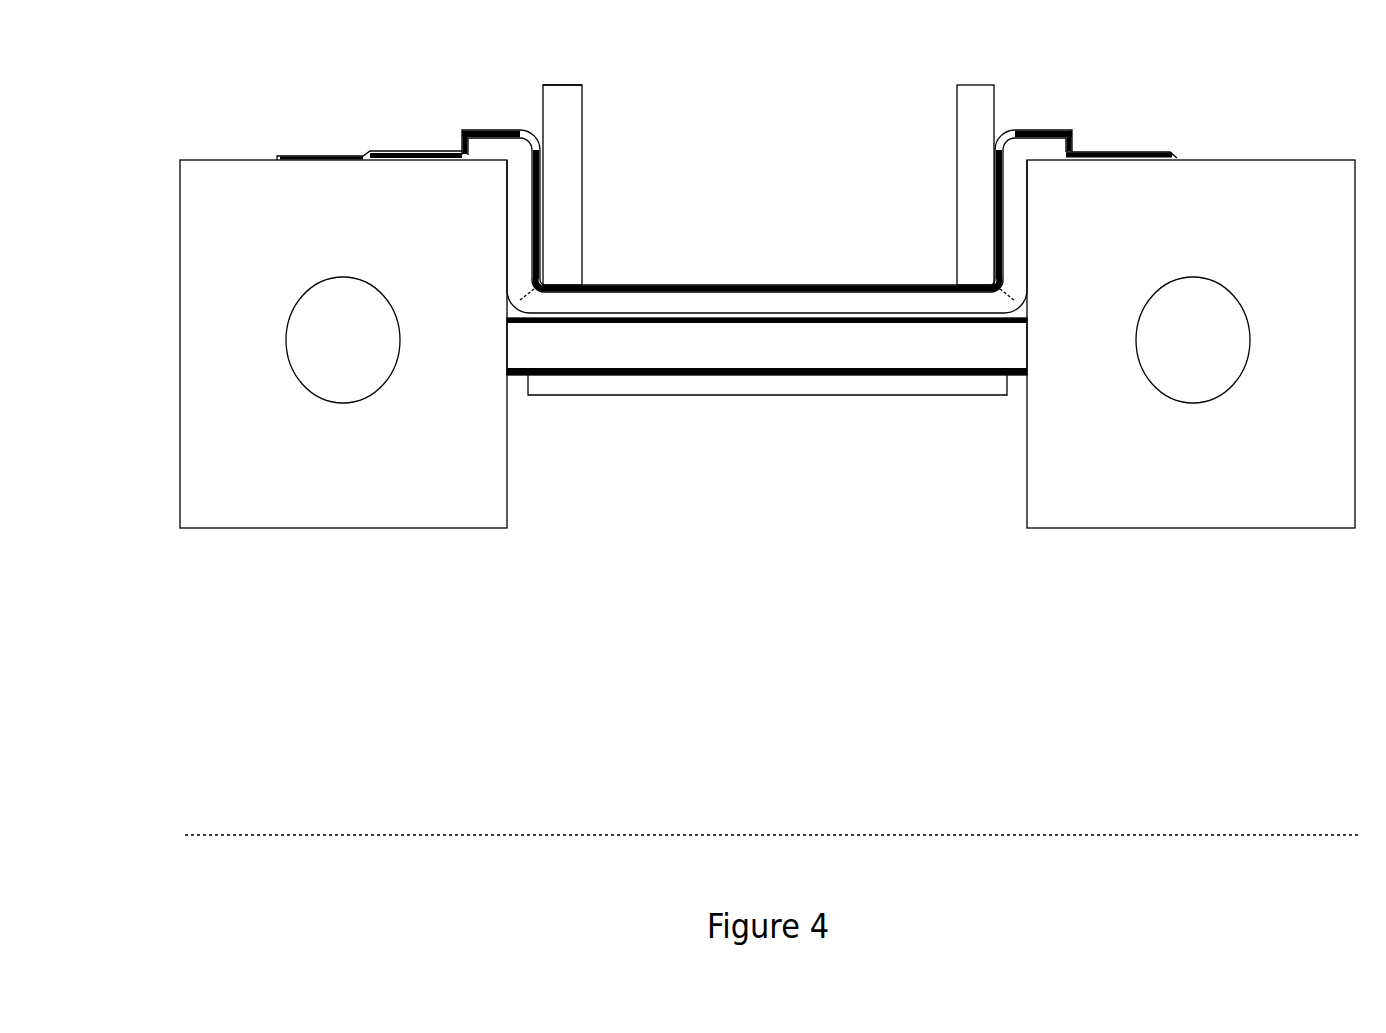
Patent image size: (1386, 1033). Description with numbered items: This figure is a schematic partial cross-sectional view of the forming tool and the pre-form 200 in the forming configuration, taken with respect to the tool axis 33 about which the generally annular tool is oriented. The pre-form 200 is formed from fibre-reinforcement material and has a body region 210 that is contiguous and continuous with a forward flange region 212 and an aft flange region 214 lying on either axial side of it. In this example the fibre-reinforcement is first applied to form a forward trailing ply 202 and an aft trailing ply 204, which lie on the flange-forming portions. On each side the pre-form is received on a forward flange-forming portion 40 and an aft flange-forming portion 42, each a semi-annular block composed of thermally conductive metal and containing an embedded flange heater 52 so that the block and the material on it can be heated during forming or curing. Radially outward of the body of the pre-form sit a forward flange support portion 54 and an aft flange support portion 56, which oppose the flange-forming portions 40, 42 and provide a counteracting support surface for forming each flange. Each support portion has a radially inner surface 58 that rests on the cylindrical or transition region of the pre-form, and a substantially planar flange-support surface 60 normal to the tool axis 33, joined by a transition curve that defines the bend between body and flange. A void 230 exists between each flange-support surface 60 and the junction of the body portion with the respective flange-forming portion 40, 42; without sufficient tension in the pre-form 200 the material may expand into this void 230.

The tool axis 33 is at (318, 838).
The forward flange-forming portion 40 is at (265, 457).
The aft flange-forming portion 42 is at (1255, 505).
The flange heater 52 is at (768, 340).
The forward flange support portion 54 is at (565, 185).
The aft flange support portion 56 is at (965, 128).
The radially inner surface 58 is at (583, 258).
The flange-support surface 60 is at (545, 117).
The pre-form 200 is at (812, 292).
The forward trailing ply 202 is at (410, 160).
The aft trailing ply 204 is at (1147, 156).
The body region 210 is at (672, 284).
The forward flange region 212 is at (470, 135).
The aft flange region 214 is at (1012, 138).
The void 230 is at (513, 308).